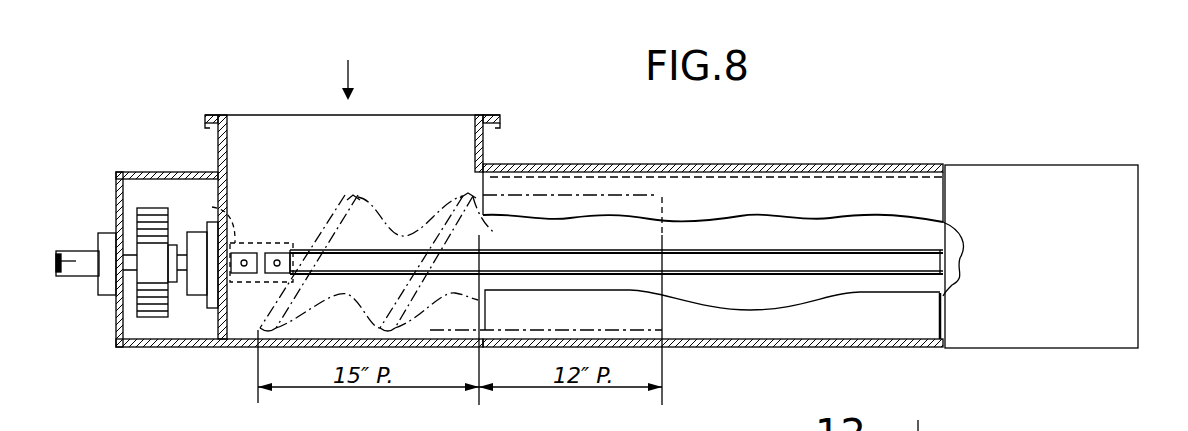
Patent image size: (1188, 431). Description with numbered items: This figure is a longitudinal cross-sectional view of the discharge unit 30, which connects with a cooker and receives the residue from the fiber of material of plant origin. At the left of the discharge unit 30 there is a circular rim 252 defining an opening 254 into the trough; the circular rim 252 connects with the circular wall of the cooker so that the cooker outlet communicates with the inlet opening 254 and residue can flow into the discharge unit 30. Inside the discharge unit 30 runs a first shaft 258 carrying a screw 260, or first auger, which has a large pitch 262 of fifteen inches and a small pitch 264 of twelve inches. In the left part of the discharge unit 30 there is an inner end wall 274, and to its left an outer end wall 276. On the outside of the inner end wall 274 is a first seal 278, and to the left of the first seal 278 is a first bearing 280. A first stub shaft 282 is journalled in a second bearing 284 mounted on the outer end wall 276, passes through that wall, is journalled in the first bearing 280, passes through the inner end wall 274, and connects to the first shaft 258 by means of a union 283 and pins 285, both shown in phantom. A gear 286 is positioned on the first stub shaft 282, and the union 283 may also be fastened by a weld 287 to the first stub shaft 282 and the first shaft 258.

The discharge unit 30 is at (1046, 165).
The circular rim 252 is at (485, 142).
The opening 254 is at (367, 130).
The first shaft 258 is at (833, 262).
The screw 260 is at (367, 205).
The large pitch 262 is at (381, 206).
The small pitch 264 is at (630, 209).
The end wall 274 is at (217, 188).
The outer end wall 276 is at (117, 195).
The first seal 278 is at (212, 300).
The first bearing 280 is at (197, 291).
The first stub shaft 282 is at (56, 252).
The union 283 is at (296, 263).
The second bearing 284 is at (98, 240).
The pins 285 is at (261, 250).
The gear 286 is at (150, 316).
The weld 287 is at (257, 220).